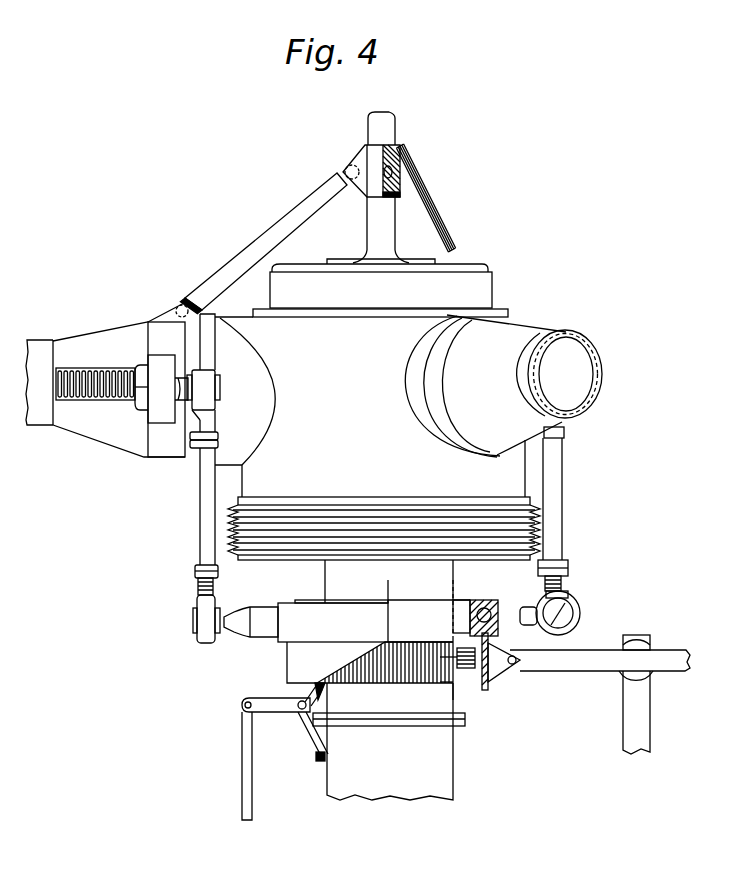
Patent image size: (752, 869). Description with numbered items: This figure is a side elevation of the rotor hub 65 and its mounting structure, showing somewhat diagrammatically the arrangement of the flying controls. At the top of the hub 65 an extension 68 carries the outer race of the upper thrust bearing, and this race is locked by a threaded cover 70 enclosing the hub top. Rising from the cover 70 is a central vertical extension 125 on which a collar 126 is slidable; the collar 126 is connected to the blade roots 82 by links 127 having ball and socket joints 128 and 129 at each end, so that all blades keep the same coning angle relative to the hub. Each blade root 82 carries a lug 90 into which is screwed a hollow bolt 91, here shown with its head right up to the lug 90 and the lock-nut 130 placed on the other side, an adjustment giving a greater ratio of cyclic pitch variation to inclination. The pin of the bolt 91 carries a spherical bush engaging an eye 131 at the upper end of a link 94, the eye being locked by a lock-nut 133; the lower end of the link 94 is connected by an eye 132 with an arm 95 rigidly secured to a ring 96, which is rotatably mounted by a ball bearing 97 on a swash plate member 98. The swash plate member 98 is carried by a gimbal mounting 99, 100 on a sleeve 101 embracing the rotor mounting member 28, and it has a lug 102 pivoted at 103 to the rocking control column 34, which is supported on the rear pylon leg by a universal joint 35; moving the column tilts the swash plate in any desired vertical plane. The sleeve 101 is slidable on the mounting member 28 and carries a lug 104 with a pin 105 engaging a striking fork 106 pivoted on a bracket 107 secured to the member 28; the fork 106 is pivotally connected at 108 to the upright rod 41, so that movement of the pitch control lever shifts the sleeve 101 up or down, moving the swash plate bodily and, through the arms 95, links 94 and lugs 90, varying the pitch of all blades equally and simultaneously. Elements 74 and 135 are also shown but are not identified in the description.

The collar 126 is at (378, 162).
The ball and socket joint 128 is at (345, 167).
The link 127 is at (312, 197).
The central vertical extension 125 is at (382, 235).
The threaded cover 70 is at (470, 264).
The extension 68 is at (478, 291).
The housing cover 74 is at (237, 333).
The ball and socket joint 129 is at (182, 304).
The blade root 82 is at (93, 338).
The lock-nut 130 is at (147, 365).
The hollow bolt 91 is at (85, 400).
The lug 90 is at (160, 397).
The link 94 is at (200, 503).
The eye 131 is at (203, 388).
The lock-nut 133 is at (207, 442).
The rotor hub 65 is at (588, 471).
The rotor mounting member 28 is at (368, 568).
The nut 135 is at (197, 577).
The eye 132 is at (208, 620).
The arm 95 is at (236, 622).
The ring 96 is at (327, 622).
The swash plate member 98 is at (462, 632).
The ball bearing 97 is at (483, 606).
The sleeve 101 is at (455, 640).
The gimbal mounting 99 is at (470, 678).
The gimbal mounting 100 is at (488, 644).
The lug 102 is at (493, 672).
The pivot 103 is at (497, 672).
The universal joint 35 is at (636, 635).
The rocking column 34 is at (673, 664).
The lug 104 is at (320, 698).
The bracket 107 is at (311, 736).
The striking fork 106 is at (278, 703).
The pivot connection 108 is at (244, 705).
The pin 105 is at (303, 712).
The upright rod 41 is at (242, 773).